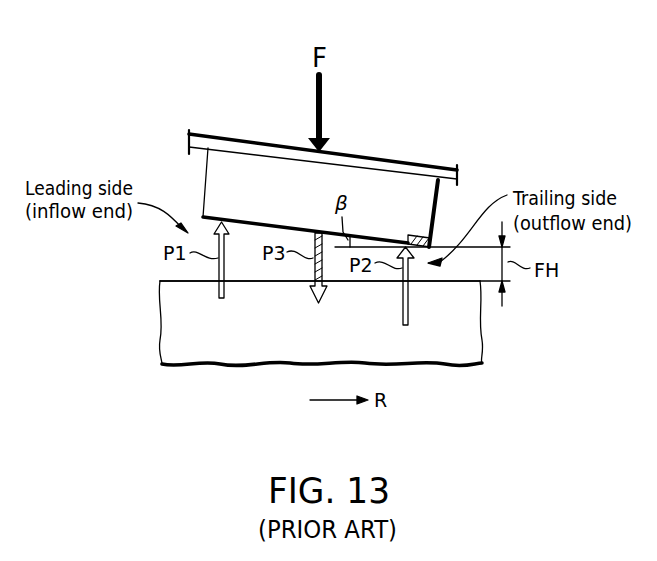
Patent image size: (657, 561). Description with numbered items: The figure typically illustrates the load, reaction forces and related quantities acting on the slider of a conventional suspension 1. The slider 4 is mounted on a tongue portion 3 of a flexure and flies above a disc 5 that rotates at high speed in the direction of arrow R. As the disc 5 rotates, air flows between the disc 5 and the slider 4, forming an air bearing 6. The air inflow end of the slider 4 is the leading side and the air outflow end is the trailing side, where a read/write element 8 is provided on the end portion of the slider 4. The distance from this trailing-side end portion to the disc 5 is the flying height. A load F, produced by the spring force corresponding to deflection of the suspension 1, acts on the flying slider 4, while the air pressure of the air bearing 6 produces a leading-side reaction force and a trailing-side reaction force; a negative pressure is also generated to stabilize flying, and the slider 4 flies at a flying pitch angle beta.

The suspension 1 is at (337, 139).
The tongue portion 3 is at (350, 163).
The slider 4 is at (395, 193).
The disc 5 is at (313, 333).
The air bearing 6 is at (252, 268).
The read/write element 8 is at (414, 235).